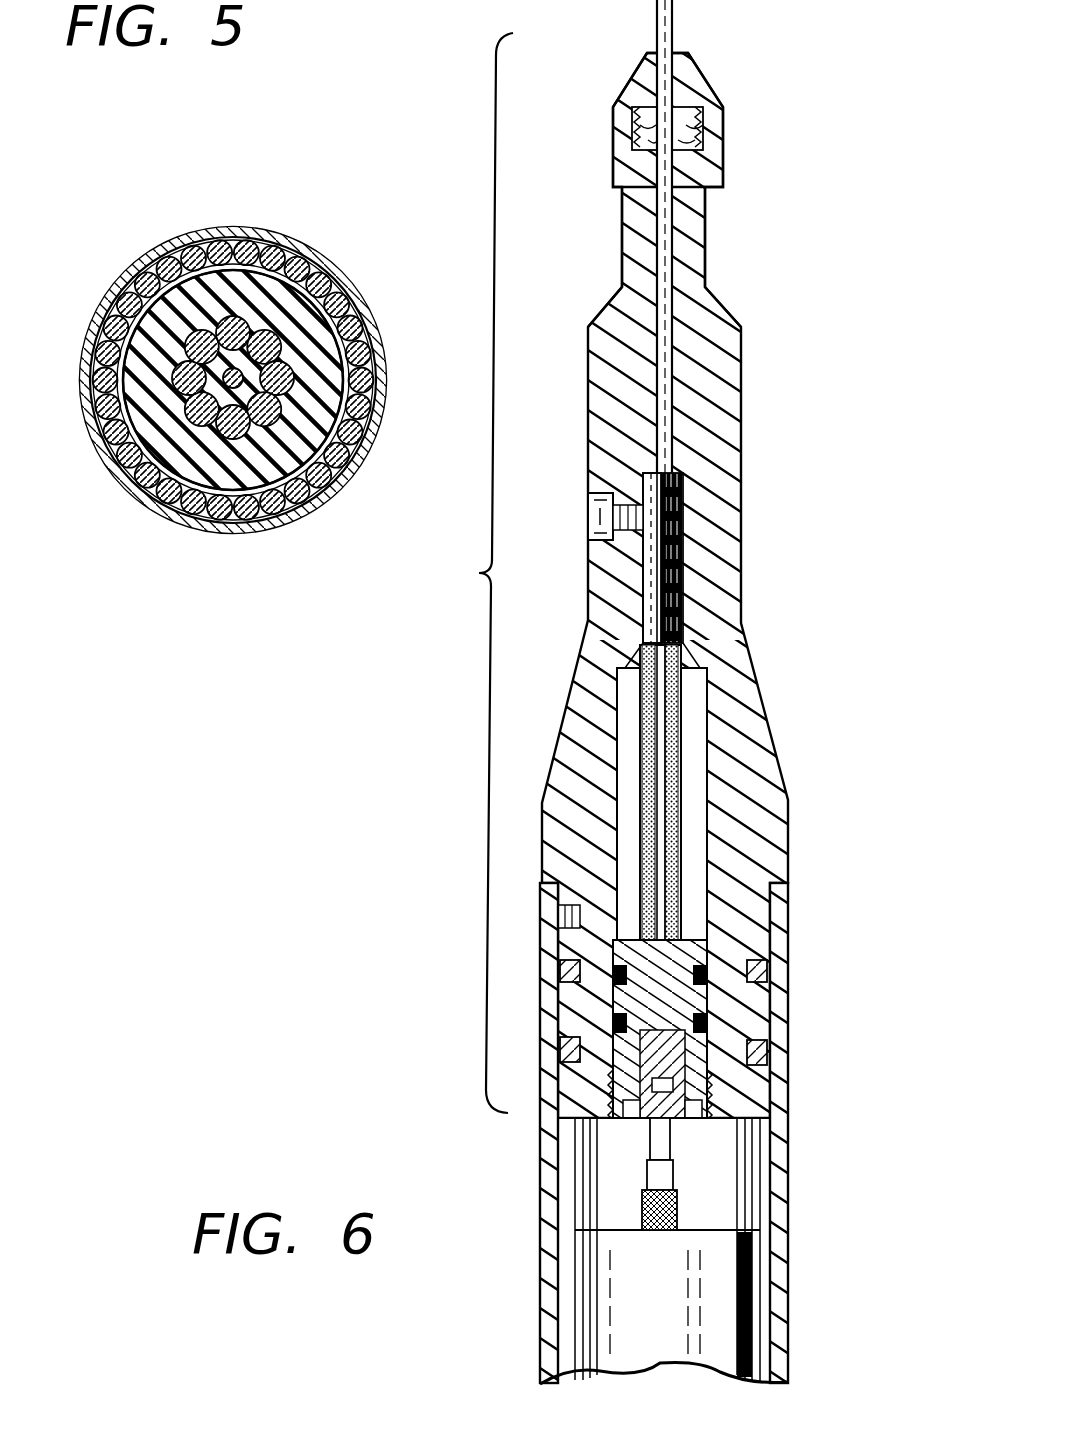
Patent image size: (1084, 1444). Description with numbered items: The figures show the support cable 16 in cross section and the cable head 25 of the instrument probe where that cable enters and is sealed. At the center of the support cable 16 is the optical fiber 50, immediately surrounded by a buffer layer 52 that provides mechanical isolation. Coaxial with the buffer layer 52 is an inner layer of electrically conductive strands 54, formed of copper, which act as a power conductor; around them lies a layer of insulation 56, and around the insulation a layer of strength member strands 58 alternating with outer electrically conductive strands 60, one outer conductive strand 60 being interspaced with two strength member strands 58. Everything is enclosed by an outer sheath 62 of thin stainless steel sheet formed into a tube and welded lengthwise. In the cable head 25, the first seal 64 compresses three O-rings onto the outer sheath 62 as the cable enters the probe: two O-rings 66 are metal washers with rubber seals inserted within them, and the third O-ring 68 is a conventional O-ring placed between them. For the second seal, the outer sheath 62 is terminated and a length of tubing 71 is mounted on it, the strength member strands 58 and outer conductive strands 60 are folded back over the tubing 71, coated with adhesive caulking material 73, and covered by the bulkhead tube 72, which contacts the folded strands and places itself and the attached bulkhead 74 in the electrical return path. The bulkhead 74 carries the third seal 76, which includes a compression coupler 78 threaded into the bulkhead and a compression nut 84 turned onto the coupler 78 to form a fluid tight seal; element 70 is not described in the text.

In FIG. 5, the support cable 16 is at (279, 182).
In FIG. 5, the optical fiber 50 is at (258, 335).
In FIG. 5, the buffer layer 52 is at (130, 487).
In FIG. 5, the inner layer of electrically conductive strands 54 is at (156, 256).
In FIG. 5, the layer of insulation 56 is at (320, 345).
In FIG. 5, the strength member strands 58 is at (96, 420).
In FIG. 6, the strength member strands 58 is at (686, 520).
In FIG. 5, the outer electrically conductive strands 60 is at (110, 300).
In FIG. 5, the outer sheath 62 is at (183, 522).
In FIG. 6, the outer sheath 62 is at (680, 246).
In FIG. 6, the first seal 64 is at (708, 68).
In FIG. 6, the O-rings (thread seals) 66 is at (742, 122).
In FIG. 6, the third O-ring 68 is at (632, 128).
In FIG. 6, the housing body 70 is at (756, 631).
In FIG. 6, the tubing 71 is at (688, 575).
In FIG. 6, the bulkhead tube 72 is at (704, 740).
In FIG. 6, the adhesive caulking material 73 is at (684, 800).
In FIG. 6, the bulkhead 74 is at (690, 946).
In FIG. 6, the third seal 76 is at (800, 1107).
In FIG. 6, the compression coupler 78 is at (690, 1048).
In FIG. 6, the compression nut 84 is at (641, 1122).
In FIG. 6, the cable head 25 is at (476, 573).